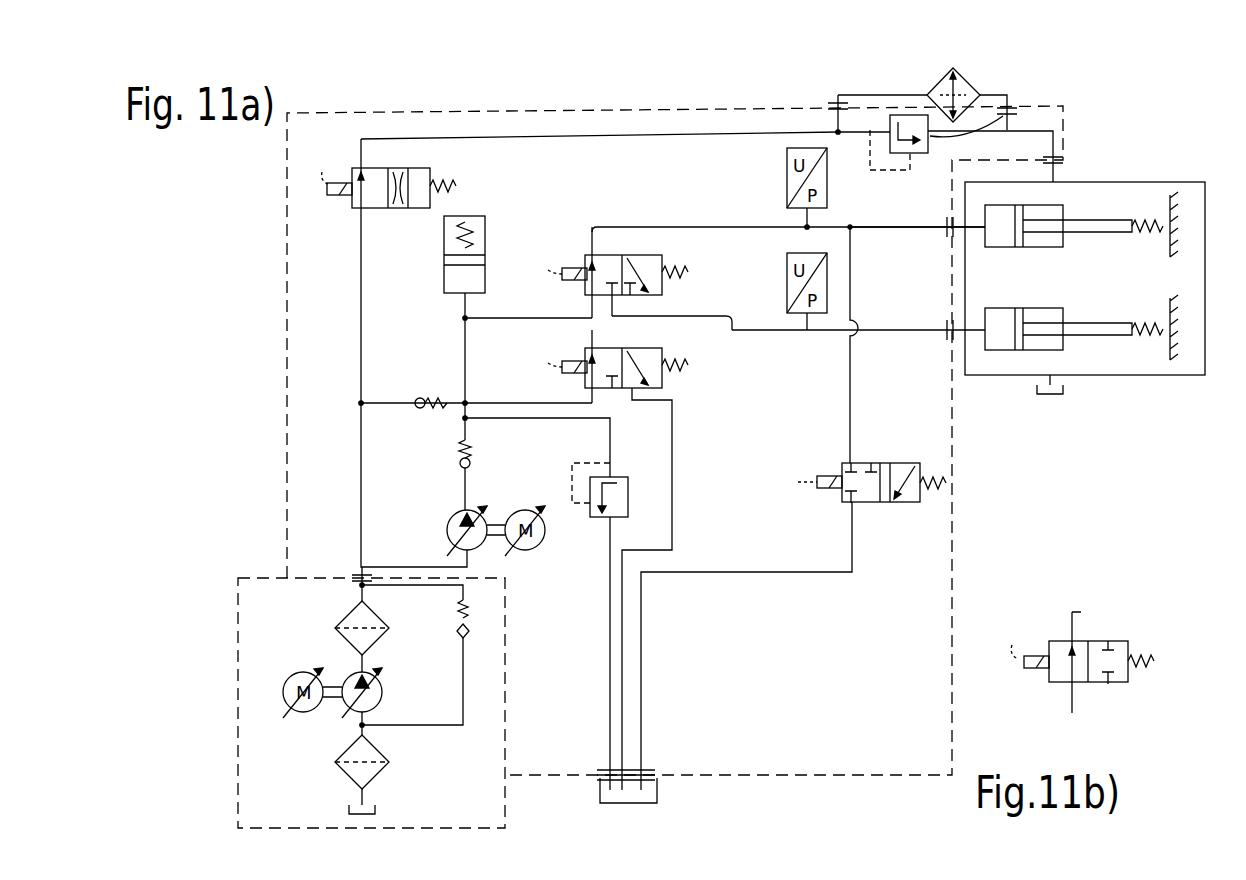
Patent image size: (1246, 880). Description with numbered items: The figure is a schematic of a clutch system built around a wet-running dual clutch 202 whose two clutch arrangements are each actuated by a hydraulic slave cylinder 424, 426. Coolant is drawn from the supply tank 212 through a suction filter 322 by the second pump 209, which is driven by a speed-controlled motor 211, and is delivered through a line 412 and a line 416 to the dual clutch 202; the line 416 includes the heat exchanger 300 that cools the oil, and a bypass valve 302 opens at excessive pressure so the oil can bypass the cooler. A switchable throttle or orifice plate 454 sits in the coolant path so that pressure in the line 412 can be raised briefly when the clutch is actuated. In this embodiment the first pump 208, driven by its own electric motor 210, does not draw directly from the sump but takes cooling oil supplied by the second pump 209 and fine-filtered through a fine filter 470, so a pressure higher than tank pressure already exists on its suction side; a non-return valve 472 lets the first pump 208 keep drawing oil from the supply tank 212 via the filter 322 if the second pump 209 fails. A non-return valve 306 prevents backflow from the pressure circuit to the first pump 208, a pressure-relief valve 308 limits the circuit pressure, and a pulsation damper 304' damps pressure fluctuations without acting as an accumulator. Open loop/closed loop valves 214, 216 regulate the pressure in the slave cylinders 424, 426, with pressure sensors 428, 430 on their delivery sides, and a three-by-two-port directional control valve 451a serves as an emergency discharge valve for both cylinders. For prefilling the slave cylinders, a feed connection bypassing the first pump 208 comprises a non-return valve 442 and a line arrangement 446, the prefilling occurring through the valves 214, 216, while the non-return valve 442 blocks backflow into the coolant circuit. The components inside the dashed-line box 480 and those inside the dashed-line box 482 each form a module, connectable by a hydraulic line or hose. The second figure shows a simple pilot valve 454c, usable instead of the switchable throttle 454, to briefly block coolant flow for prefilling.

In FIG. 11A, the dual clutch 202 is at (1120, 157).
In FIG. 11A, the first pump 208 is at (450, 525).
In FIG. 11A, the second pump 209 is at (380, 700).
In FIG. 11A, the electric motor 210 is at (538, 545).
In FIG. 11A, the motor 211 is at (288, 692).
In FIG. 11A, the supply tank 212 is at (1062, 392).
In FIG. 11A, the valve 214 is at (656, 260).
In FIG. 11A, the valve 216 is at (652, 356).
In FIG. 11A, the heat exchanger 300 is at (965, 93).
In FIG. 11A, the bypass valve 302 is at (1008, 114).
In FIG. 11A, the pulsation damper 304' is at (499, 251).
In FIG. 11A, the non-return valve 306 is at (458, 461).
In FIG. 11A, the pressure-relief valve 308 is at (590, 496).
In FIG. 11A, the suction filter 322 is at (372, 760).
In FIG. 11A, the line 412 is at (361, 303).
In FIG. 11B, the line 412 is at (1070, 703).
In FIG. 11A, the line 416 is at (541, 111).
In FIG. 11A, the slave cylinder 424 is at (999, 318).
In FIG. 11A, the slave cylinder 426 is at (1003, 247).
In FIG. 11A, the pressure sensor 428 is at (787, 290).
In FIG. 11A, the pressure sensor 430 is at (787, 187).
In FIG. 11A, the non-return valve 442 is at (421, 398).
In FIG. 11A, the line arrangement 446 is at (382, 402).
In FIG. 11A, the 3/2-port directional control valve 451a is at (906, 494).
In FIG. 11A, the switchable throttle or orifice plate 454 is at (380, 208).
In FIG. 11B, the pilot valve 454c is at (1080, 649).
In FIG. 11A, the fine filter 470 is at (340, 620).
In FIG. 11A, the non-return valve 472 is at (455, 627).
In FIG. 11A, the dashed-line box 480 is at (238, 605).
In FIG. 11A, the dashed-line box 482 is at (287, 365).